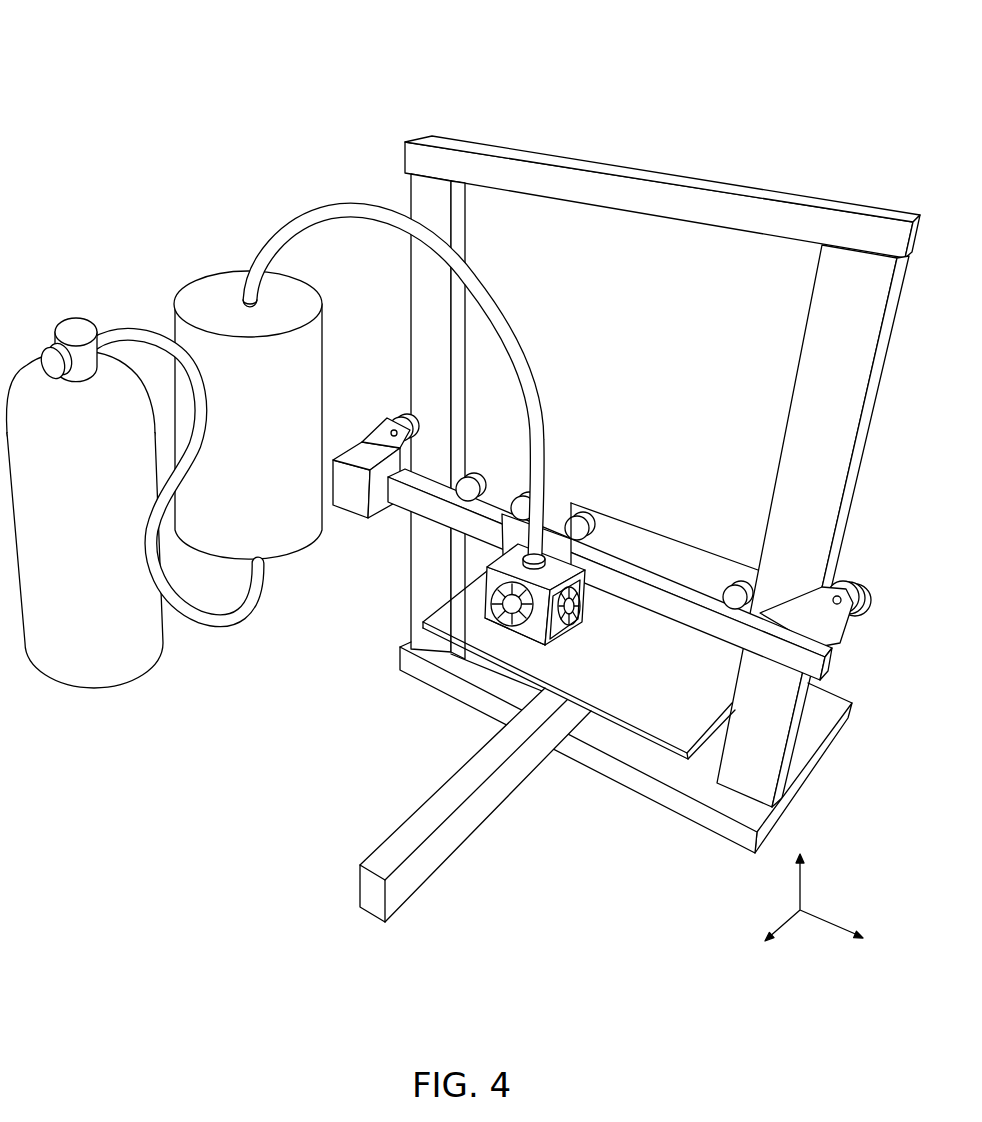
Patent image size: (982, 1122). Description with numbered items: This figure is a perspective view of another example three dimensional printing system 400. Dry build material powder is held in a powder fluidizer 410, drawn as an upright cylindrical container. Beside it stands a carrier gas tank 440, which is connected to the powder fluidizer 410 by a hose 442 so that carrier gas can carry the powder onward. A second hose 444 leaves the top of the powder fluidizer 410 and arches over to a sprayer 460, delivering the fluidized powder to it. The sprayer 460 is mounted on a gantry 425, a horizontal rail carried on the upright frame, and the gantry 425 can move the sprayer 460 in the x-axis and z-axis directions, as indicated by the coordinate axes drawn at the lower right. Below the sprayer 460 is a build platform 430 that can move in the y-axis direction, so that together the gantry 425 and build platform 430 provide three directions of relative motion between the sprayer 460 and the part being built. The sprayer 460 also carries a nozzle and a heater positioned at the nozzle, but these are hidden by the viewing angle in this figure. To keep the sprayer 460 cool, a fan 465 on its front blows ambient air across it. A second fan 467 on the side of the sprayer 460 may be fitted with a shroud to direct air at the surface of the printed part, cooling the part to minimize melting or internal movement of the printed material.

The three dimensional printing system 400 is at (136, 48).
The powder fluidizer 410 is at (217, 273).
The gantry 425 is at (628, 560).
The build platform 430 is at (673, 540).
The carrier gas tank 440 is at (74, 688).
The hose 442 is at (120, 328).
The hose 444 is at (330, 207).
The sprayer 460 is at (518, 557).
The fan 465 is at (487, 617).
The second fan 467 is at (585, 623).